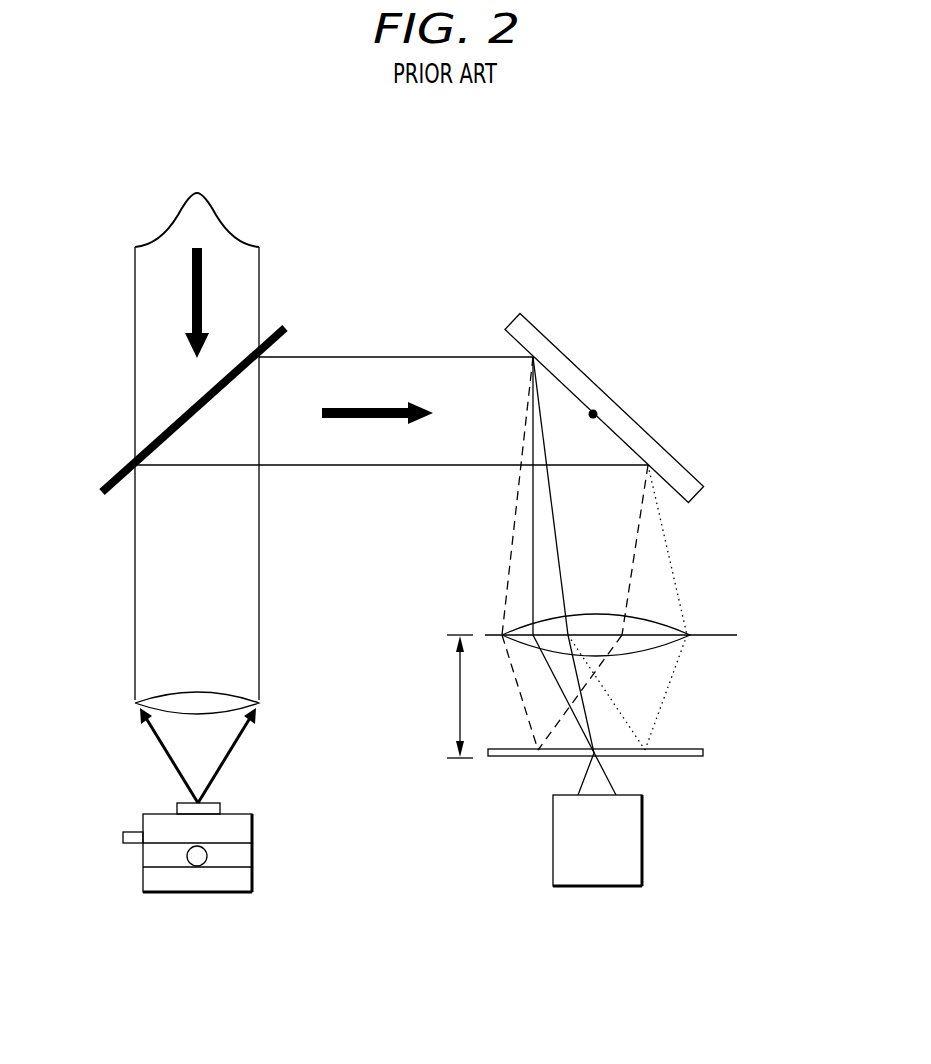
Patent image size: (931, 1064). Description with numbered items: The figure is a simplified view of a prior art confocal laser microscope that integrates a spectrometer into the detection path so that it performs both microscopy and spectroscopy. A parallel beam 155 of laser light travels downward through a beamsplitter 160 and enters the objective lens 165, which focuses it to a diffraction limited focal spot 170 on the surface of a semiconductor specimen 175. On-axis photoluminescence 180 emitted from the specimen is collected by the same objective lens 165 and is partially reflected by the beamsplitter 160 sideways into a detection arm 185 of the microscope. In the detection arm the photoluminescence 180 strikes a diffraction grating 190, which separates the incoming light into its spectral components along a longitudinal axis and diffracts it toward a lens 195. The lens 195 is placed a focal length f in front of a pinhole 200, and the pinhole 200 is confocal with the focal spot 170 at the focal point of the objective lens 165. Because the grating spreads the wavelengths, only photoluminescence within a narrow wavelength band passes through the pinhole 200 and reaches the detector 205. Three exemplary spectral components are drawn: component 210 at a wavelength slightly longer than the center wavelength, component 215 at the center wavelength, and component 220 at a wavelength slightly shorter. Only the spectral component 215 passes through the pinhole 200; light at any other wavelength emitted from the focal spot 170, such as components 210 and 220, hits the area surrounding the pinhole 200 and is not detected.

The parallel beam 155 is at (197, 429).
The beamsplitter 160 is at (118, 471).
The objective lens 165 is at (135, 703).
The focal spot 170 is at (203, 800).
The semiconductor specimen 175 is at (177, 808).
The on-axis photoluminescence 180 is at (471, 465).
The detection arm 185 is at (391, 494).
The diffraction grating 190 is at (557, 350).
The lens 195 is at (690, 637).
The pinhole 200 is at (703, 753).
The detector 205 is at (642, 842).
The spectral component 210 is at (568, 605).
The spectral component 215 is at (535, 568).
The spectral component 220 is at (515, 527).